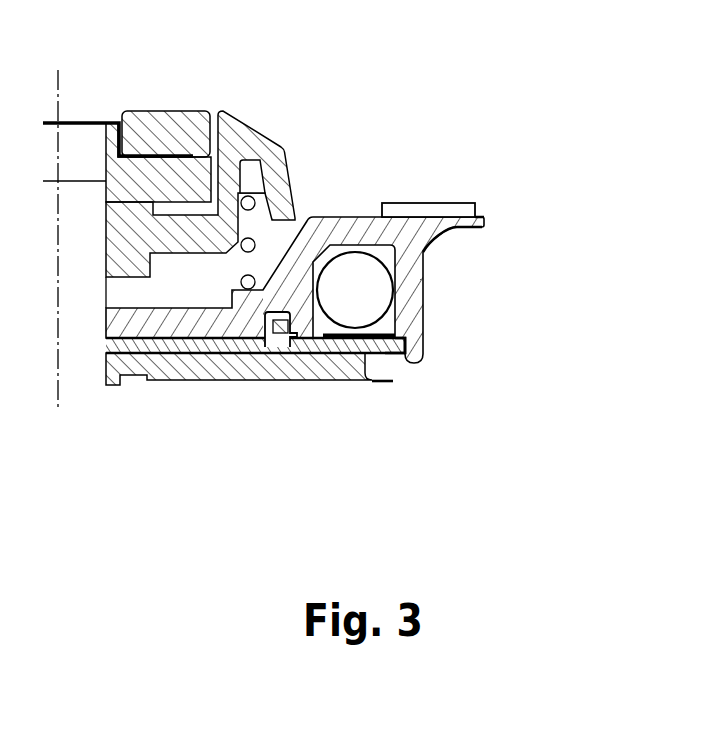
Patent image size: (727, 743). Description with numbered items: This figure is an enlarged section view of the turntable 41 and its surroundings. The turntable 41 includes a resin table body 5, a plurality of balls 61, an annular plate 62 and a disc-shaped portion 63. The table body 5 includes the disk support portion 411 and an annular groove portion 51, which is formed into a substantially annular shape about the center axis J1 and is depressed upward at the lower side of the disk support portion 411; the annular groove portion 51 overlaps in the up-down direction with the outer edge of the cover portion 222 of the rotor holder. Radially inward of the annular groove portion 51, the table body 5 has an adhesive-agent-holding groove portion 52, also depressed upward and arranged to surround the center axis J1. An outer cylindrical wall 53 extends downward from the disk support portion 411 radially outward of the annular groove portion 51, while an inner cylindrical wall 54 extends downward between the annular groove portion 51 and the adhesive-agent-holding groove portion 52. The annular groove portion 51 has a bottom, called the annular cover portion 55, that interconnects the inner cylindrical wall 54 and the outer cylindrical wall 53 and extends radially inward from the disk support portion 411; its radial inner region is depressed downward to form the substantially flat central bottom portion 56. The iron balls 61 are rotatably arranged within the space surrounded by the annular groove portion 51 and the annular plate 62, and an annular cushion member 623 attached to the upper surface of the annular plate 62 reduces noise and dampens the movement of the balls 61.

The center axis J1 is at (62, 87).
The table body 5 is at (370, 186).
The turntable 41 is at (369, 221).
The disk support portion 411 is at (418, 222).
The annular cover portion 55 is at (340, 222).
The outer cylindrical wall 53 is at (417, 280).
The central bottom portion 56 is at (147, 318).
The annular groove portion 51 is at (422, 382).
The balls 61 is at (380, 295).
The annular plate 62 is at (395, 355).
The annular cushion member 623 is at (352, 312).
The adhesive-agent-holding groove portion 52 is at (285, 402).
The disc-shaped portion 63 is at (140, 348).
The inner cylindrical wall 54 is at (303, 338).
The cover portion 222 is at (182, 373).